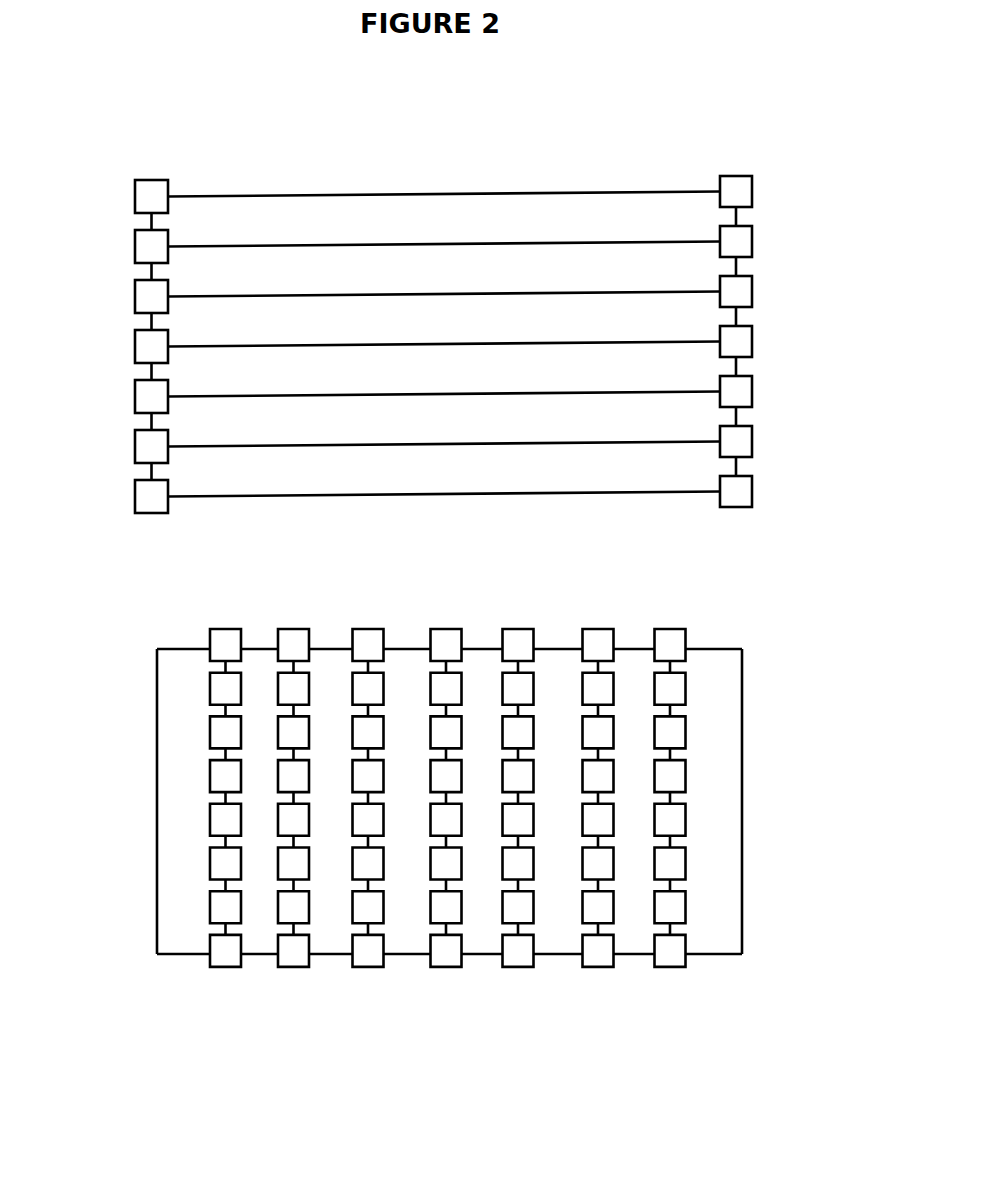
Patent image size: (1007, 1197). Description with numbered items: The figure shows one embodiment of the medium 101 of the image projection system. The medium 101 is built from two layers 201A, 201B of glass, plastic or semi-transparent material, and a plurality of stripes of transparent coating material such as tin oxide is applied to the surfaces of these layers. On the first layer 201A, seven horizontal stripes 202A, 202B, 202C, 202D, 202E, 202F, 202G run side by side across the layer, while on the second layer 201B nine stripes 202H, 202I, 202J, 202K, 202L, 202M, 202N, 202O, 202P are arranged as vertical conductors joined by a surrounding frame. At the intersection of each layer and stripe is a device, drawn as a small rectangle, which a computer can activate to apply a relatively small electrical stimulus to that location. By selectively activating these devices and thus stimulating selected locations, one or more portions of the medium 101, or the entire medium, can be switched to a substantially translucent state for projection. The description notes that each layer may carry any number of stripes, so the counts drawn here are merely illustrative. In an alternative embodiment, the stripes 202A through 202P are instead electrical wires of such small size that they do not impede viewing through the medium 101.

The medium 101 is at (761, 77).
The layer 201A is at (700, 163).
The layer 201B is at (705, 615).
The stripe 202A is at (417, 192).
The stripe 202B is at (687, 242).
The stripe 202C is at (687, 292).
The stripe 202D is at (687, 342).
The stripe 202E is at (687, 392).
The stripe 202F is at (687, 442).
The stripe 202G is at (687, 492).
The stripe 202H is at (160, 954).
The stripe 202I is at (234, 957).
The stripe 202J is at (302, 957).
The stripe 202K is at (376, 957).
The stripe 202L is at (454, 957).
The stripe 202M is at (526, 957).
The stripe 202N is at (606, 957).
The stripe 202O is at (678, 957).
The stripe 202P is at (740, 953).